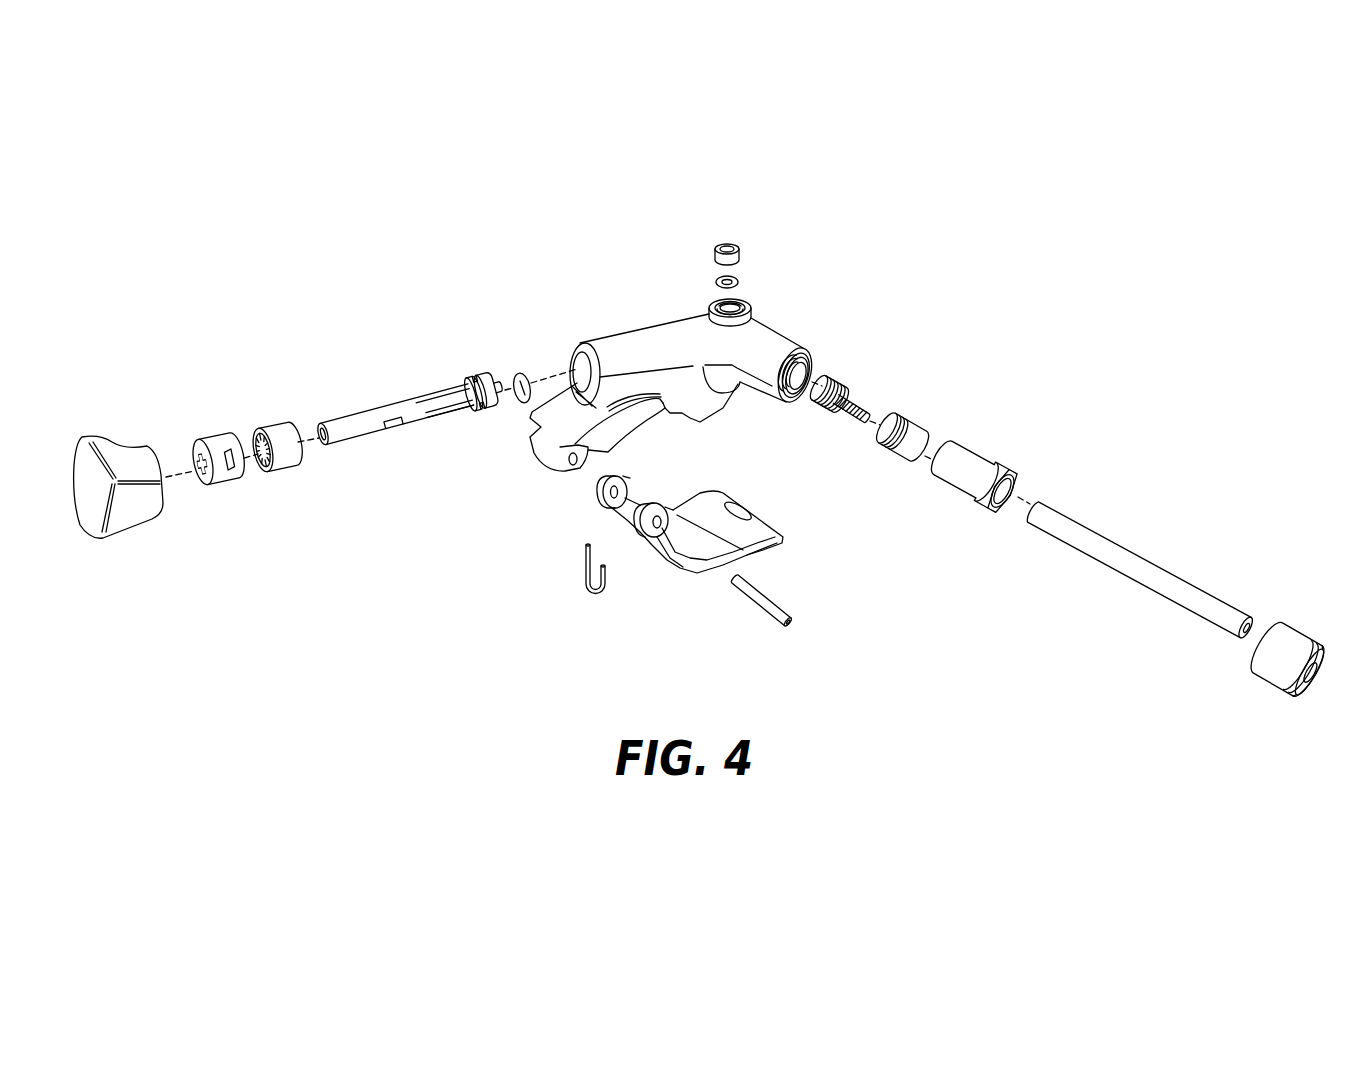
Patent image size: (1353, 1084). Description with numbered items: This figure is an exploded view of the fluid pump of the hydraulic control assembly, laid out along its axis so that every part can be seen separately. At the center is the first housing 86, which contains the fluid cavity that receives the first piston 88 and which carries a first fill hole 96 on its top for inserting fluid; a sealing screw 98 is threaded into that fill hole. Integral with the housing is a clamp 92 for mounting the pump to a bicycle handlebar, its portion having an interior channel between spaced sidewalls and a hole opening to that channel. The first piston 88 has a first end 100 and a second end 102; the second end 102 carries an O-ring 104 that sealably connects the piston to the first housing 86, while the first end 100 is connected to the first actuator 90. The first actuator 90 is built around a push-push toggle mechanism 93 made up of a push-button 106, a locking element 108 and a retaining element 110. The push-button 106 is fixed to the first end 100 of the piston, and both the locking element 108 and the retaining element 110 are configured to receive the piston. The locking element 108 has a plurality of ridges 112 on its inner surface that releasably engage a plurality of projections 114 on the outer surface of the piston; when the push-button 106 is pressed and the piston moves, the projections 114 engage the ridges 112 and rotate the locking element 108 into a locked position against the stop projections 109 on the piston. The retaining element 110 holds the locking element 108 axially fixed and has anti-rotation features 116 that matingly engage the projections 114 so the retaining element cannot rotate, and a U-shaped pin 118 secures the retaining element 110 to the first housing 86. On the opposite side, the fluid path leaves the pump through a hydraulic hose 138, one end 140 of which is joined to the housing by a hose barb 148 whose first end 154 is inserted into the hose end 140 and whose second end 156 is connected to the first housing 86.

The first housing 86 is at (654, 339).
The first piston 88 is at (376, 420).
The first actuator 90 is at (345, 563).
The clamp 92 is at (578, 485).
The push-push toggle mechanism 93 is at (236, 413).
The first fill hole 96 is at (740, 306).
The sealing screw 98 is at (739, 257).
The first end 100 is at (325, 426).
The second end 102 is at (486, 378).
The O-ring 104 is at (523, 373).
The push-button 106 is at (134, 513).
The locking element 108 is at (291, 464).
The stop projections 109 is at (455, 422).
The retaining element 110 is at (228, 472).
The ridges 112 is at (271, 468).
The projections 114 is at (396, 431).
The anti-rotation features 116 is at (196, 461).
The U-shaped pin 118 is at (586, 578).
The hydraulic hose 138 is at (1140, 578).
The end of hydraulic hose 140 is at (1037, 505).
The hose barb 148 is at (851, 404).
The first end of hose barb 154 is at (884, 430).
The second end of hose barb 156 is at (829, 380).